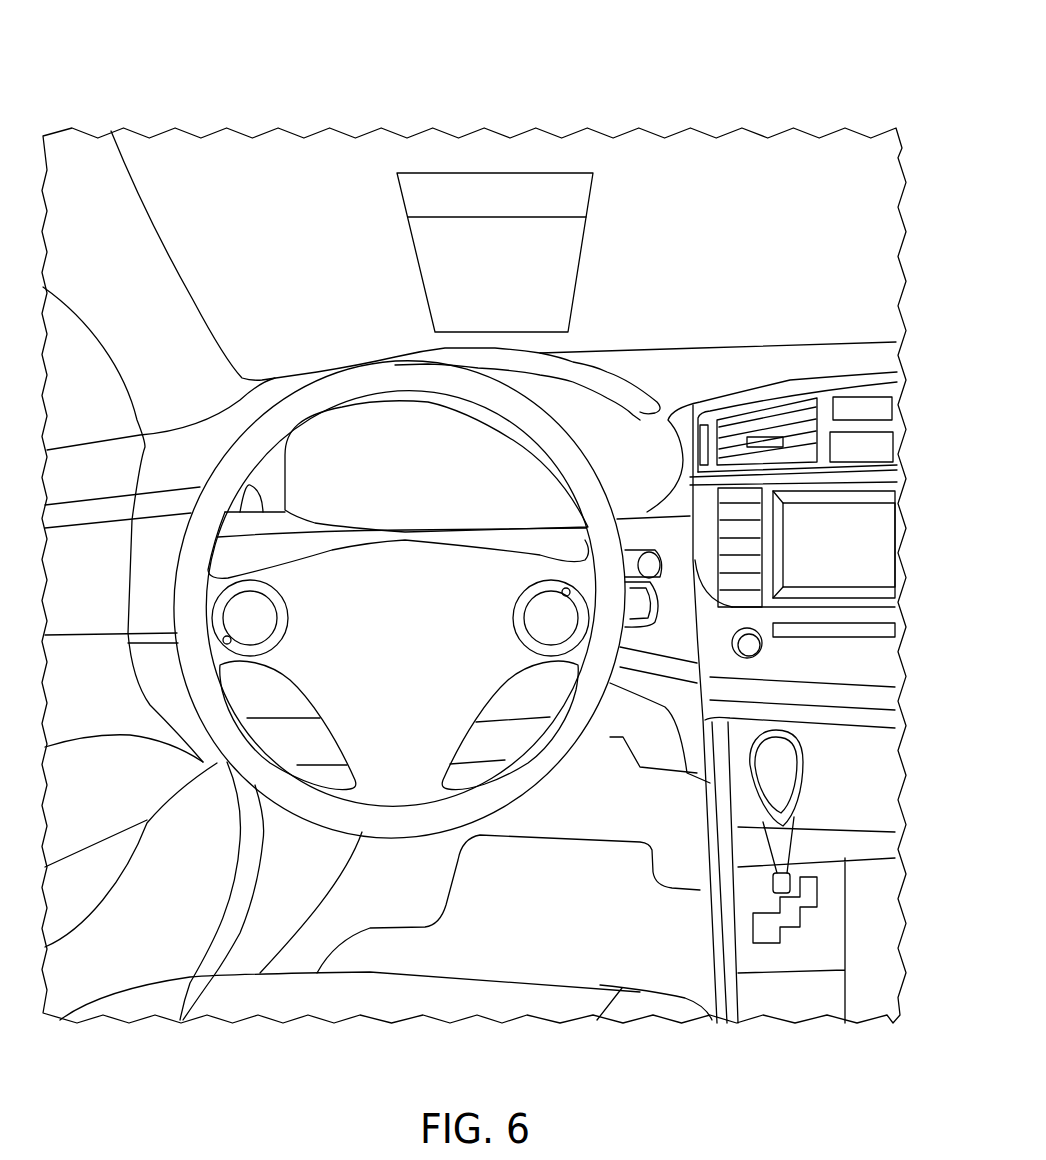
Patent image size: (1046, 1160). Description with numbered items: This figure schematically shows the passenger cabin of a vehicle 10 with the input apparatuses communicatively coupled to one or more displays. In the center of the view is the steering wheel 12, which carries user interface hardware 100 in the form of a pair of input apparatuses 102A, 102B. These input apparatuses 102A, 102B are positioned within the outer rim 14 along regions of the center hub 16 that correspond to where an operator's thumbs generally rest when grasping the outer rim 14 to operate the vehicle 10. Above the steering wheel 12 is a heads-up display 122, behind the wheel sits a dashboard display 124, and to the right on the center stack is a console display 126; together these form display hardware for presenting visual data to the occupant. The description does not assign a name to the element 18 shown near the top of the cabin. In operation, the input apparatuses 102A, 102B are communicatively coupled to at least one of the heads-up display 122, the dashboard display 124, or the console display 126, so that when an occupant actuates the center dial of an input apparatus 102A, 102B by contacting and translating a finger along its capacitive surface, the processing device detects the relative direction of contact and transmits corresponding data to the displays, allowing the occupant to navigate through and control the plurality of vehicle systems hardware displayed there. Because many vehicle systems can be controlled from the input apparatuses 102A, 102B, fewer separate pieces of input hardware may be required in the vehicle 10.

The vehicle 10 is at (75, 105).
The steering wheel 12 is at (336, 388).
The outer rim 14 is at (392, 376).
The center hub 16 is at (413, 632).
The rearview mirror 18 is at (545, 150).
The user interface hardware 100 is at (268, 678).
The input apparatus 102A is at (268, 636).
The input apparatus 102B is at (522, 636).
The heads-up display 122 is at (427, 231).
The dashboard display 124 is at (536, 488).
The console display 126 is at (847, 533).